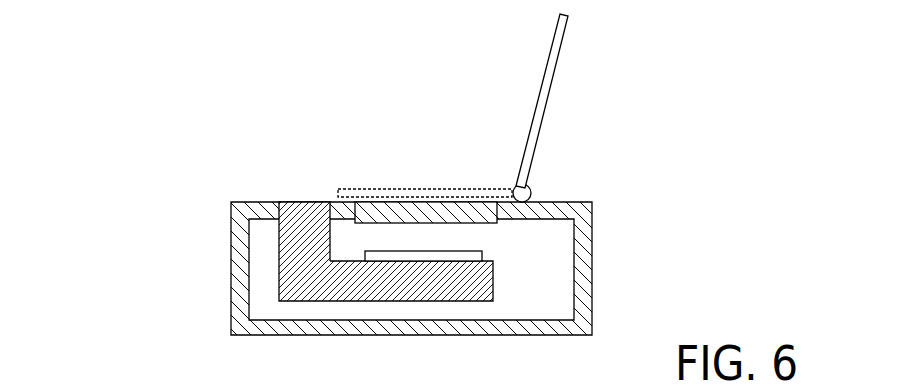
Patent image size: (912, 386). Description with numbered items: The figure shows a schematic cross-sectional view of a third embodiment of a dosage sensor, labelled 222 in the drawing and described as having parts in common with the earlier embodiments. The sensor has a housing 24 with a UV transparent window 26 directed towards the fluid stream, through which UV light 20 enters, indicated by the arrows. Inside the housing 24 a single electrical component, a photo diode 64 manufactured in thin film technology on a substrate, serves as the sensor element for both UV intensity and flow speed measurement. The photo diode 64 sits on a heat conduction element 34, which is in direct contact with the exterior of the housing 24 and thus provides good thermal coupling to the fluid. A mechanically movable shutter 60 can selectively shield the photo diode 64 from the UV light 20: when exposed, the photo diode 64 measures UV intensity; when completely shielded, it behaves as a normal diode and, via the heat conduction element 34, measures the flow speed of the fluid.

The UV light 20 is at (452, 182).
The housing 24 is at (232, 284).
The UV transparent window 26 is at (333, 205).
The heat conduction element 34 is at (393, 290).
The mechanically movable shutter 60 is at (534, 133).
The photo diode 64 is at (486, 257).
The apparatus 222 is at (152, 259).